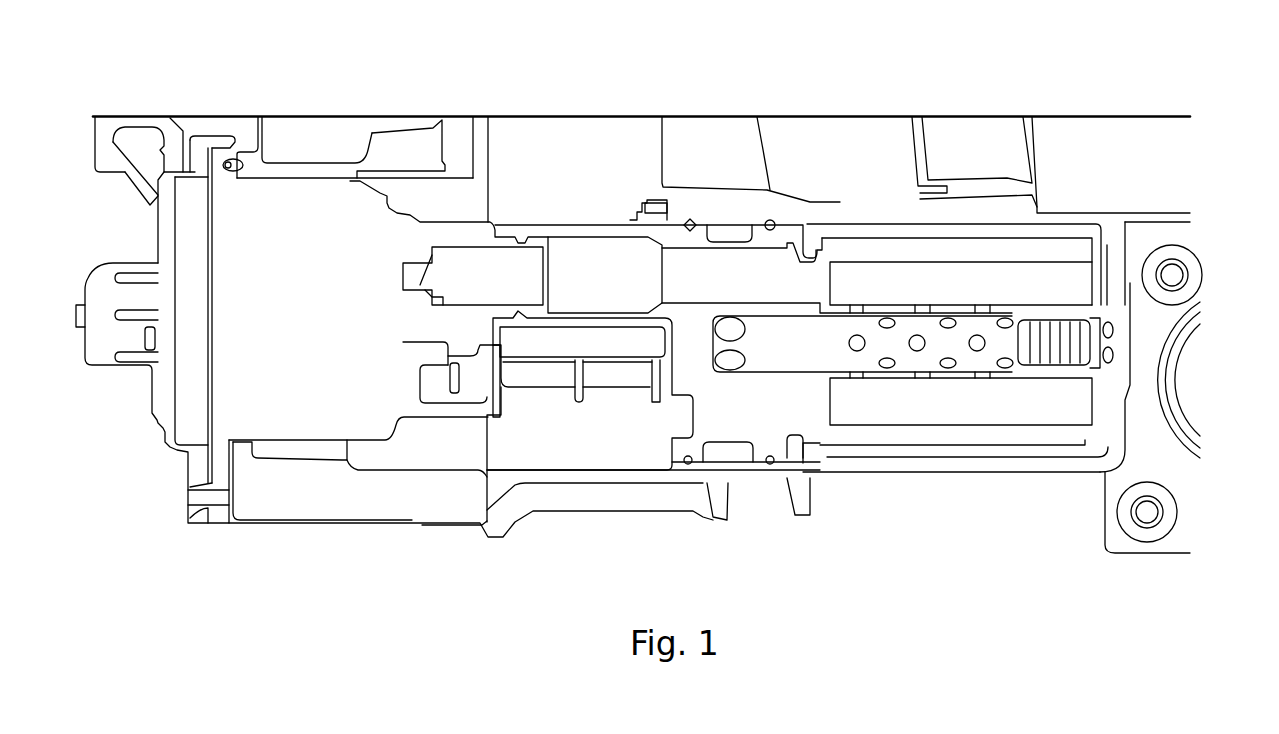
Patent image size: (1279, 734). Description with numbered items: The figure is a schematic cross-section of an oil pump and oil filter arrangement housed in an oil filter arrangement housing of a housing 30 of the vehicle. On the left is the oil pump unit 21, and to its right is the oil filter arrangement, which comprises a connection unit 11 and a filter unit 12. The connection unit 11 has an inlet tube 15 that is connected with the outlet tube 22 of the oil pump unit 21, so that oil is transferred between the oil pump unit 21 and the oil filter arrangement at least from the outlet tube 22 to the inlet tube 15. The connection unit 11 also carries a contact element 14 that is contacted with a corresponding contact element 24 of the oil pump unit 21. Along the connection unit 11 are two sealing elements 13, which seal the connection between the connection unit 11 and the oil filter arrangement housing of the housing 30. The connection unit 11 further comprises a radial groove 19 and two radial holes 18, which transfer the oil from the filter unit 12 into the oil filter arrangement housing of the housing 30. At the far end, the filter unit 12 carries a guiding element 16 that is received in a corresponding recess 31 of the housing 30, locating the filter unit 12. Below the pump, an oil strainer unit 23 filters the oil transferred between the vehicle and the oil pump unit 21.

The connection unit 11 is at (672, 233).
The filter unit 12 is at (893, 243).
The sealing elements 13 is at (690, 220).
The contact element 14 is at (569, 318).
The inlet tube 15 is at (554, 255).
The guiding element 16 is at (1114, 322).
The radial holes 18 is at (743, 338).
The radial groove 19 is at (717, 450).
The oil pump unit 21 is at (332, 243).
The outlet tube 22 is at (475, 270).
The oil strainer unit 23 is at (567, 443).
The contact element 24 is at (471, 337).
The housing 30 is at (1052, 133).
The recess 31 is at (1130, 283).